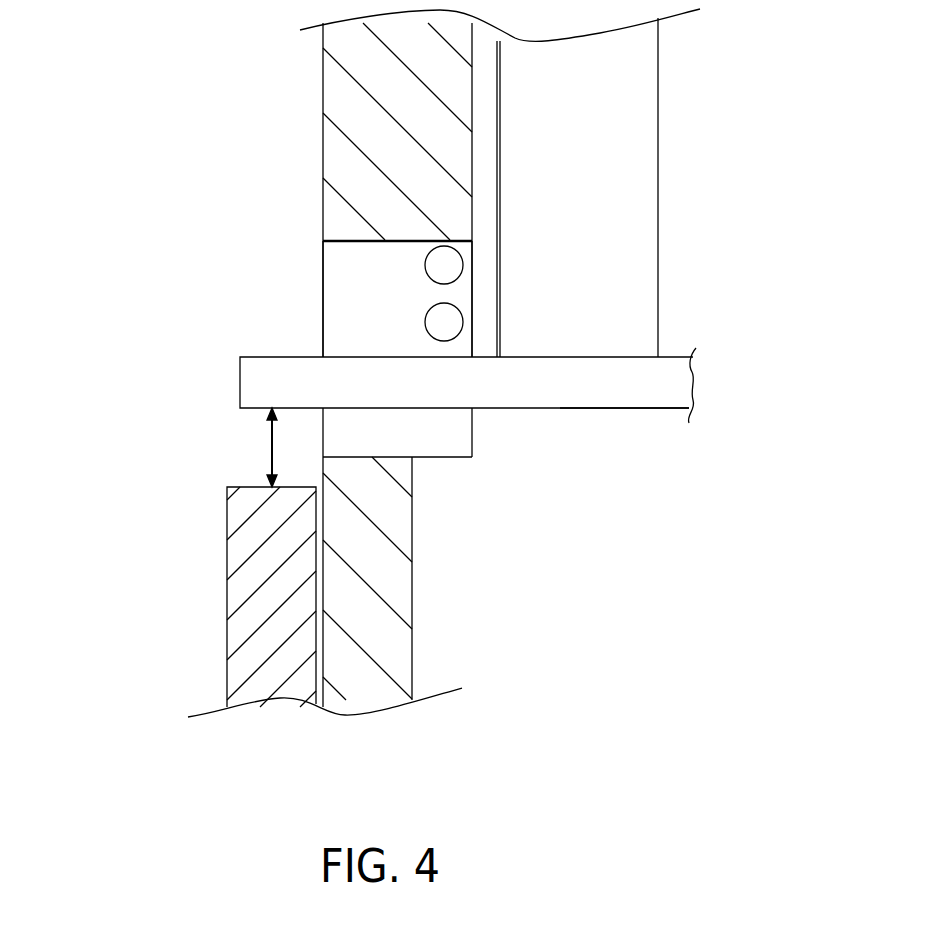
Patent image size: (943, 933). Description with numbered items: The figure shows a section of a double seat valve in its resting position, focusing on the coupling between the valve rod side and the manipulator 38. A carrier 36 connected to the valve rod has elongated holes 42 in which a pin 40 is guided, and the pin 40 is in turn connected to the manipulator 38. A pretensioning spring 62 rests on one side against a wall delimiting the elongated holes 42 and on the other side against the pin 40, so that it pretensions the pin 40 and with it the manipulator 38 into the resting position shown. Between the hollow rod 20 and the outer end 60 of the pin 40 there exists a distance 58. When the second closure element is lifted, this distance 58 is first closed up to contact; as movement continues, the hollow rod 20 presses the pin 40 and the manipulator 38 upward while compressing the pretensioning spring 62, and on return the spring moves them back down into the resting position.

The hollow rod 20 is at (237, 595).
The carrier 36 is at (338, 93).
The manipulator 38 is at (638, 188).
The pin 40 is at (607, 390).
The elongated holes 42 is at (347, 272).
The distance 58 is at (270, 448).
The outer end of the pin 60 is at (267, 388).
The pretensioning spring 62 is at (438, 324).